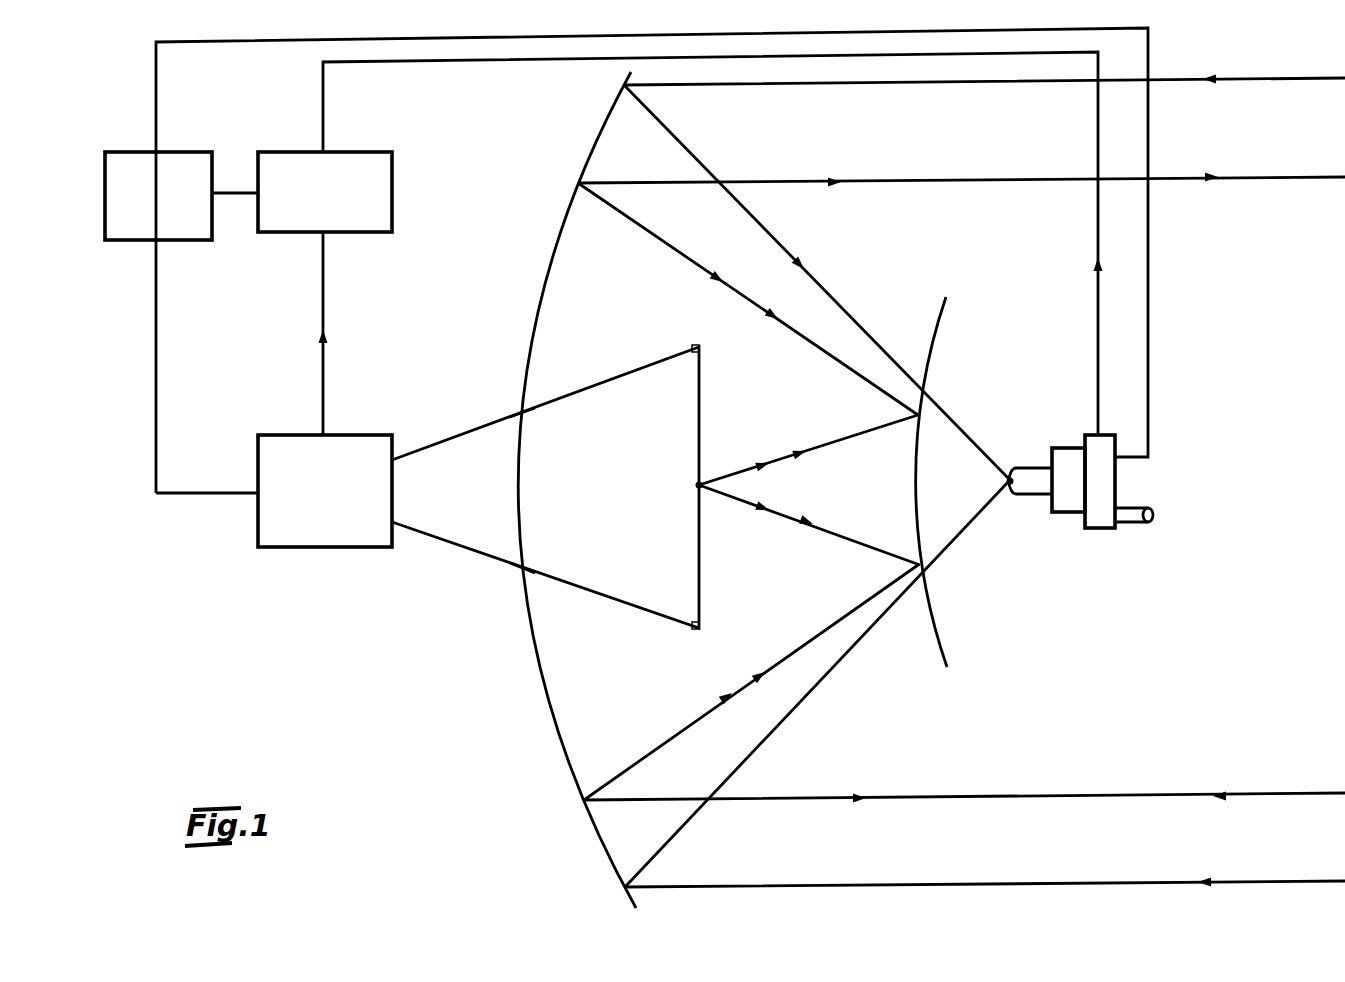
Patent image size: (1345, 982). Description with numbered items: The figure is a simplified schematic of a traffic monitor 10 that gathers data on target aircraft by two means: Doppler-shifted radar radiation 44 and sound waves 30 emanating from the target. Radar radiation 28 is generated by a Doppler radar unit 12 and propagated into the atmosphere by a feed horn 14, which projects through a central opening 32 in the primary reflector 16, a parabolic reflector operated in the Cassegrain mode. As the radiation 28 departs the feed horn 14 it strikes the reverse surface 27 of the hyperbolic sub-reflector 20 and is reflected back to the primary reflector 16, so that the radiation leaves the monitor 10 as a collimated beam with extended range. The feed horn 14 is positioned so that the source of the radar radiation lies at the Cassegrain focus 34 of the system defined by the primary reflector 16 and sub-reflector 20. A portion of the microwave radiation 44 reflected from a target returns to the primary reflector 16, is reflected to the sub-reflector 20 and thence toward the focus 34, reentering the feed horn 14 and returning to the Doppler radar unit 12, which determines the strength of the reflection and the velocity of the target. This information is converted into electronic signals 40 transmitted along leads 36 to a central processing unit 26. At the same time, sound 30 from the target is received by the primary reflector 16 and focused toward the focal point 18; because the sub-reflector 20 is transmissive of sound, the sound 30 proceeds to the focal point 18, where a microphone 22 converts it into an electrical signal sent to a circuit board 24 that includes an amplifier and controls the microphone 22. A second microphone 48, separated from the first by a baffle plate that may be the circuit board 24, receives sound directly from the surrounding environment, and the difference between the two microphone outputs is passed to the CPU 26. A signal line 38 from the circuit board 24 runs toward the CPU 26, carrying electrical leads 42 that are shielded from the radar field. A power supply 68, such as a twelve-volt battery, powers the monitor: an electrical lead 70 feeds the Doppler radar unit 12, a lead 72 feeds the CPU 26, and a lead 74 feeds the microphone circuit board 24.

The traffic monitor 10 is at (477, 782).
The Doppler radar unit 12 is at (295, 548).
The feed horn 14 is at (448, 541).
The primary reflector 16 is at (551, 258).
The focal point 18 is at (1006, 480).
The sub-reflector 20 is at (933, 613).
The microphone 22 is at (1009, 492).
The circuit board 24 is at (1117, 484).
The central processing unit 26 is at (392, 152).
The reverse surface 27 is at (932, 625).
The radar radiation 28 is at (715, 277).
The sound waves 30 is at (1265, 78).
The central opening 32 is at (522, 412).
The Cassegrain focus 34 is at (697, 485).
The leads 36 is at (323, 280).
The detector to CPU line 38 is at (1097, 314).
The electronic signals 40 is at (325, 335).
The electrical leads 42 is at (1096, 257).
The Doppler-shifted radar radiation 44 is at (773, 318).
The second microphone 48 is at (1125, 528).
The power supply 68 is at (200, 240).
The electrical lead 70 is at (156, 275).
The lead 72 is at (228, 193).
The lead 74 is at (156, 68).